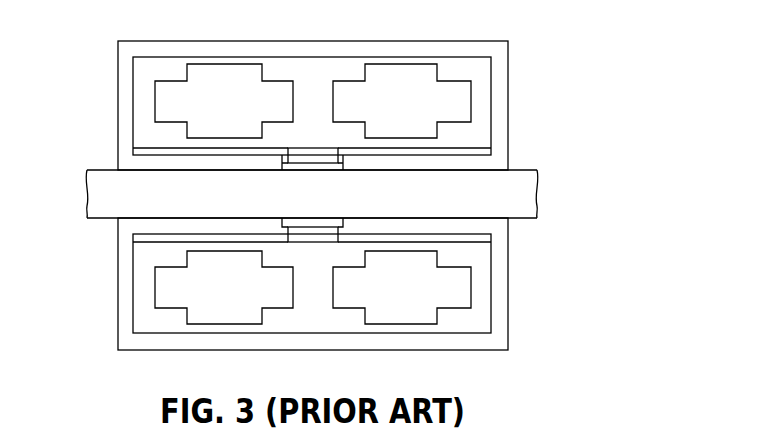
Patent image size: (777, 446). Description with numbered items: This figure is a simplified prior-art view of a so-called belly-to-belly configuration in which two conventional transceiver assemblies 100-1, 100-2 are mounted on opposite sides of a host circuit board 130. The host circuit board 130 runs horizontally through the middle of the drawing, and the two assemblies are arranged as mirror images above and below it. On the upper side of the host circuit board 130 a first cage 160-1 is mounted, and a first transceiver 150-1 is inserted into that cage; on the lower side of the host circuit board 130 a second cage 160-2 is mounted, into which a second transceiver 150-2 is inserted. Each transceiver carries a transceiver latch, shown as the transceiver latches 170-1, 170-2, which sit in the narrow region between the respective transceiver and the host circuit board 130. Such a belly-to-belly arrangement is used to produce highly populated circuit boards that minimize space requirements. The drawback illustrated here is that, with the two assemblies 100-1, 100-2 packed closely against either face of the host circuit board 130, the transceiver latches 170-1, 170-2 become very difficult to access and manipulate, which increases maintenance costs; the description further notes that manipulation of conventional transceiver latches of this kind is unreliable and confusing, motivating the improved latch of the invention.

The transceiver assembly 100-1 is at (356, 86).
The transceiver assembly 100-2 is at (357, 297).
The host circuit board 130 is at (332, 205).
The first transceiver 150-1 is at (145, 70).
The second transceiver 150-2 is at (483, 317).
The first cage 160-1 is at (483, 50).
The second cage 160-2 is at (127, 340).
The transceiver latch 170-1 is at (320, 155).
The transceiver latch 170-2 is at (313, 237).